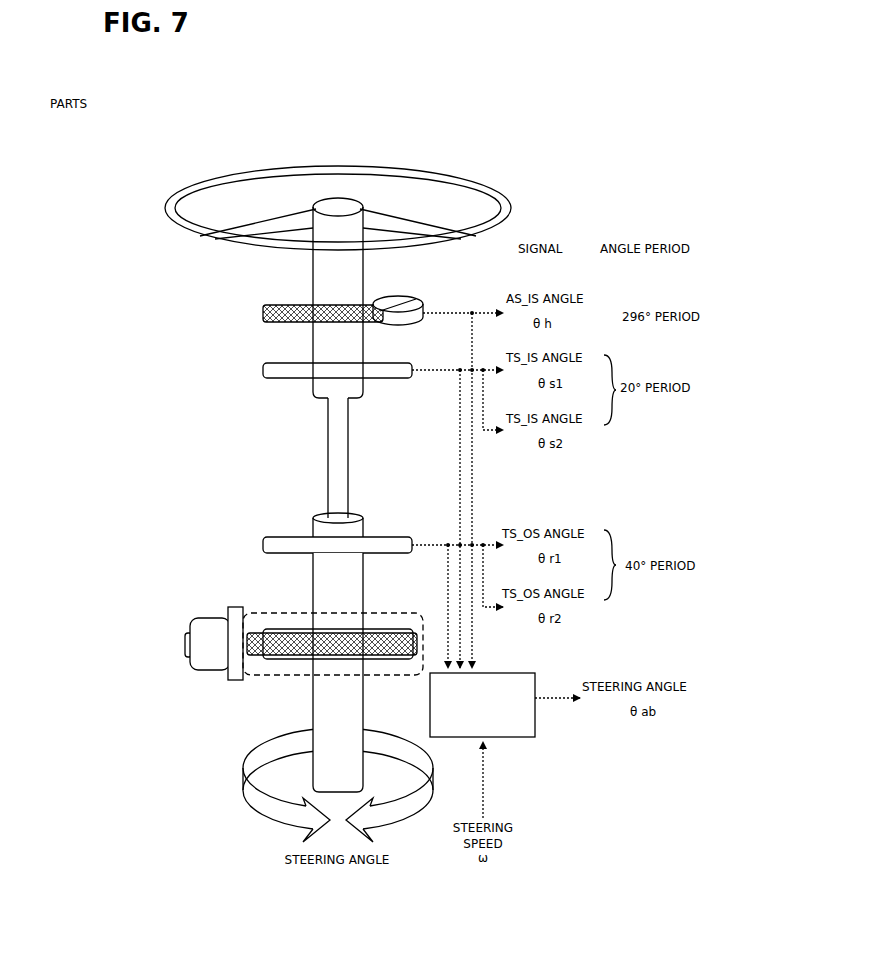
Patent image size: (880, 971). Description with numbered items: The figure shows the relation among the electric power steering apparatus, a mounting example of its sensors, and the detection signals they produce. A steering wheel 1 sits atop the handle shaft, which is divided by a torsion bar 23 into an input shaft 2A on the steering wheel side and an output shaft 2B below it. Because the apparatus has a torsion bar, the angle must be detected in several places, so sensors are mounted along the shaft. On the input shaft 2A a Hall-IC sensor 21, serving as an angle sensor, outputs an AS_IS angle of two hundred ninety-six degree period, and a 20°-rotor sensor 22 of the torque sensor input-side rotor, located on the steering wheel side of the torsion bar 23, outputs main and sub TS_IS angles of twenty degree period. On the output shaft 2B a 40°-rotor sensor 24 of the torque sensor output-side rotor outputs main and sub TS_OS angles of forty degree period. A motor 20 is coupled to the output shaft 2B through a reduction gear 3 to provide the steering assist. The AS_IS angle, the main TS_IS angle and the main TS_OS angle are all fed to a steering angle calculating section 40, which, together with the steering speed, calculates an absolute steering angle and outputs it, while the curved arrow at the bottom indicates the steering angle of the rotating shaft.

The steering wheel 1 is at (195, 178).
The input shaft 2A is at (365, 272).
The output shaft 2B is at (365, 702).
The reduction gear 3 is at (278, 677).
The motor 20 is at (200, 615).
The Hall-IC sensor 21 is at (280, 303).
The 20°-rotor sensor 22 is at (278, 358).
The torsion bar 23 is at (322, 447).
The 40°-rotor sensor 24 is at (278, 533).
The steering angle calculating section 40 is at (538, 683).